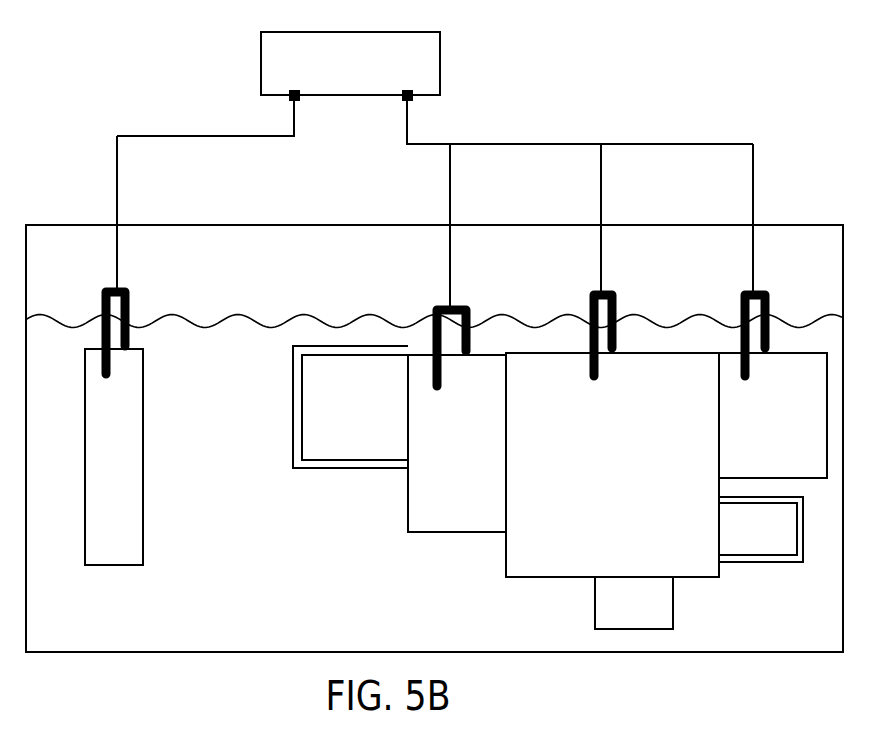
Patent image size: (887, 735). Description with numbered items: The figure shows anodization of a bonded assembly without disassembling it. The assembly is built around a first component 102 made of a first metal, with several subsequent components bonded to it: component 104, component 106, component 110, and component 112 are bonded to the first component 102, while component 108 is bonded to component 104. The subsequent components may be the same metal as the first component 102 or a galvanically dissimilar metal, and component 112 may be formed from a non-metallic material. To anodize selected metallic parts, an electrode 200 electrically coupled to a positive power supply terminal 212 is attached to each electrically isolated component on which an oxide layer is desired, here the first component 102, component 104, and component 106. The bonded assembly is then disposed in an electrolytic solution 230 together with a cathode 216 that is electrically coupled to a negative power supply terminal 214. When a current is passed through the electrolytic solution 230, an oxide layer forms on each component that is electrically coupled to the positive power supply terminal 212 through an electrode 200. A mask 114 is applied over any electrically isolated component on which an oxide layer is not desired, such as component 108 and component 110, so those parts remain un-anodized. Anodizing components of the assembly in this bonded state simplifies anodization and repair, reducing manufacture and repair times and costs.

The first component 102 is at (612, 465).
The component 104 is at (457, 443).
The component 106 is at (773, 415).
The component 108 is at (355, 407).
The component 110 is at (758, 529).
The component 112 is at (634, 603).
The mask 114 is at (363, 467).
The electrode 200 is at (425, 304).
The positive power supply terminal 212 is at (412, 95).
The negative power supply terminal 214 is at (290, 95).
The cathode 216 is at (94, 447).
The electrolytic solution 230 is at (221, 541).